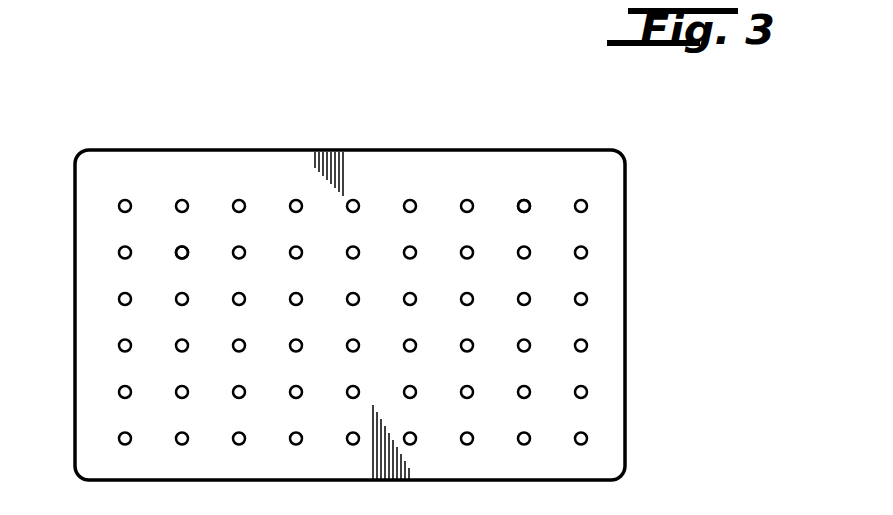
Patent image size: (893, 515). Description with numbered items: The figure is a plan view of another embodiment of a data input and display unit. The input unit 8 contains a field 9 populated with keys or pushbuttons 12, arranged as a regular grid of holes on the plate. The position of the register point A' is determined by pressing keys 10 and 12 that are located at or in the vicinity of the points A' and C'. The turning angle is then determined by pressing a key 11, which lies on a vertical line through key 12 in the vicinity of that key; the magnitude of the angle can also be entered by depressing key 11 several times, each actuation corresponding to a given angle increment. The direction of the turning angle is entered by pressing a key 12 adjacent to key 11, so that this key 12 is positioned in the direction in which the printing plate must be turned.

The input unit 8 is at (541, 150).
The field 9 is at (590, 207).
The key 10 is at (176, 255).
The key 11 is at (519, 201).
The key 12 is at (528, 257).
The register point A' is at (202, 179).
The point C' is at (570, 154).